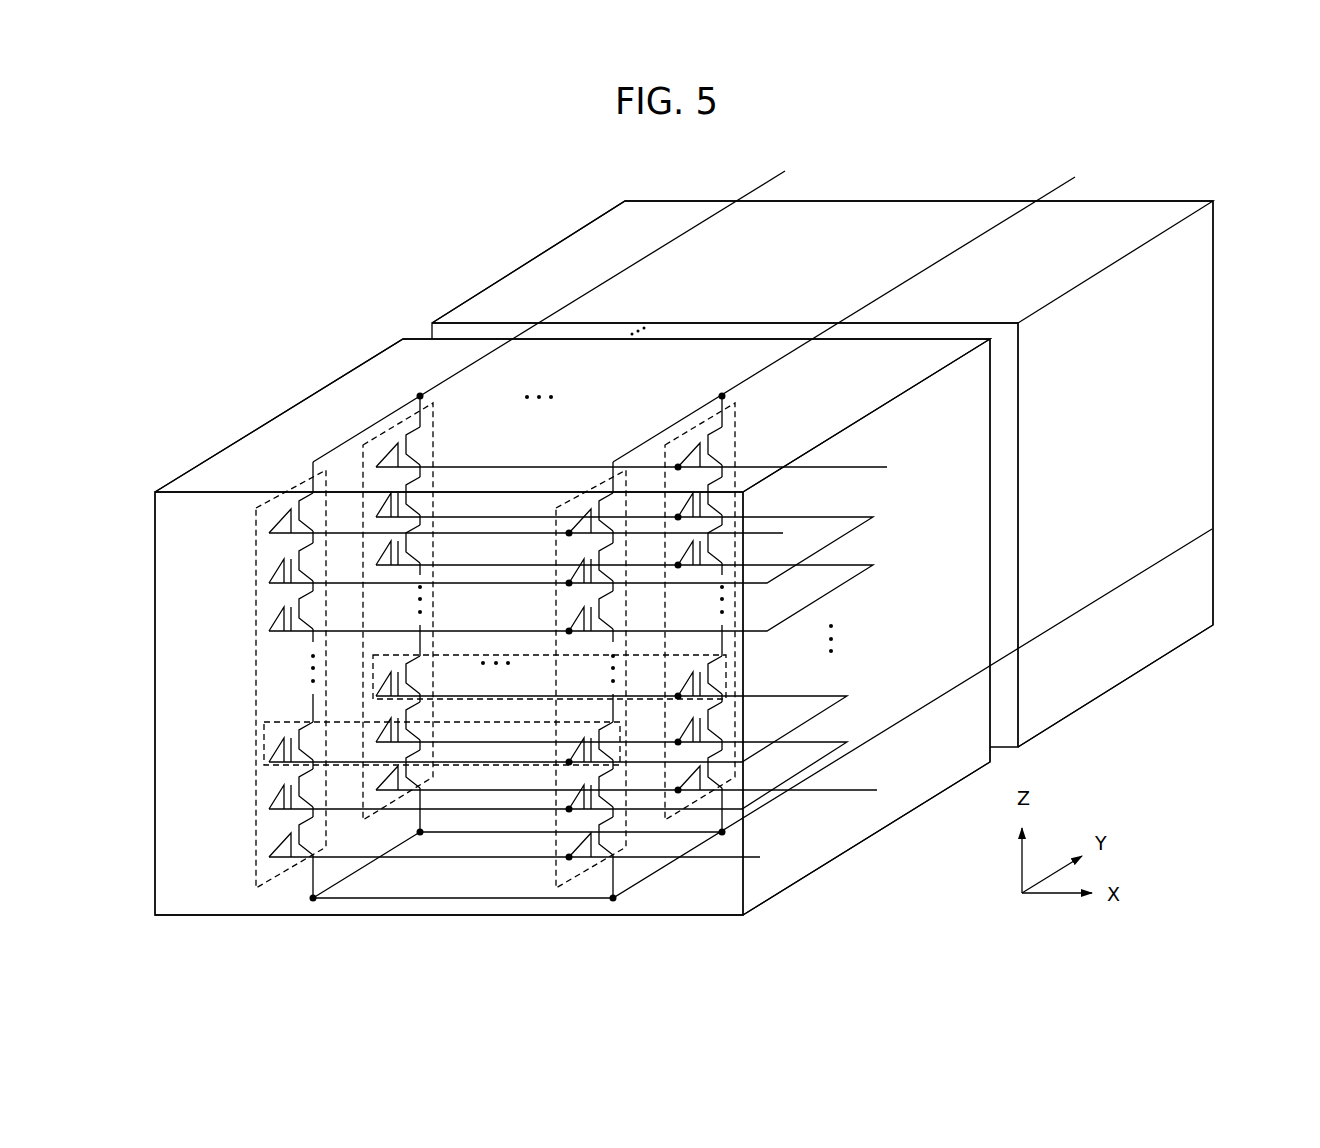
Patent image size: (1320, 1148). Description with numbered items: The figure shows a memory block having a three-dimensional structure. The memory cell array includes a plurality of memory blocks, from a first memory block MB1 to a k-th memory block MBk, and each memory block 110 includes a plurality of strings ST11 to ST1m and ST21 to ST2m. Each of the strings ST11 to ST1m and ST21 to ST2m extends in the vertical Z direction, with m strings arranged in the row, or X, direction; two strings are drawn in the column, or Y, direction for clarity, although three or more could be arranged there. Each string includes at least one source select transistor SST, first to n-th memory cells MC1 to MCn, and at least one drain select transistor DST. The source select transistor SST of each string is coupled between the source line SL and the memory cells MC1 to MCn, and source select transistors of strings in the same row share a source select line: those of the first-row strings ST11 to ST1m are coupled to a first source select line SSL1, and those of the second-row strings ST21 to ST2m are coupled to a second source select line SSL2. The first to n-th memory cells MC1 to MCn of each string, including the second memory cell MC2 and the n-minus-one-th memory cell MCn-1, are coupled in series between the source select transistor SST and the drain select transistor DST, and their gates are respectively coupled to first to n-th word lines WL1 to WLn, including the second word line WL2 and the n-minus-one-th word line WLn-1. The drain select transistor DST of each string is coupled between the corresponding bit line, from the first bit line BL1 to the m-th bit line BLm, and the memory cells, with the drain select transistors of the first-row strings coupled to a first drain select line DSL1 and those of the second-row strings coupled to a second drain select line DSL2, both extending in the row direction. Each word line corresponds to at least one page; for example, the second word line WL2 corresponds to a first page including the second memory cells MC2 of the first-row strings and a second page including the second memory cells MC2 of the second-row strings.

The memory block 110 is at (1156, 169).
The k-th memory block MBk is at (550, 248).
The first memory block MB1 is at (298, 403).
The first bit line BL1 is at (551, 308).
The m-th bit line BLm is at (852, 309).
The source line SL is at (781, 704).
The string in the first row, first column ST11 is at (295, 490).
The string in the first row, m-th column ST1m is at (592, 488).
The string in the second row, first column ST21 is at (401, 426).
The string in the second row, m-th column ST2m is at (702, 425).
The drain select transistor DST is at (268, 516).
The n-th memory cell MCn is at (268, 566).
The (n-1)-th memory cell MCn-1 is at (268, 612).
The second memory cell MC2 is at (264, 746).
The first memory cell MC1 is at (264, 788).
The source select transistor SST is at (264, 836).
The first drain select line DSL1 is at (547, 534).
The second drain select line DSL2 is at (652, 468).
The first source select line SSL1 is at (534, 859).
The second source select line SSL2 is at (646, 793).
The n-th word line WLn is at (821, 550).
The (n-1)-th word line WLn-1 is at (821, 597).
The second word line WL2 is at (793, 728).
The first word line WL1 is at (793, 775).